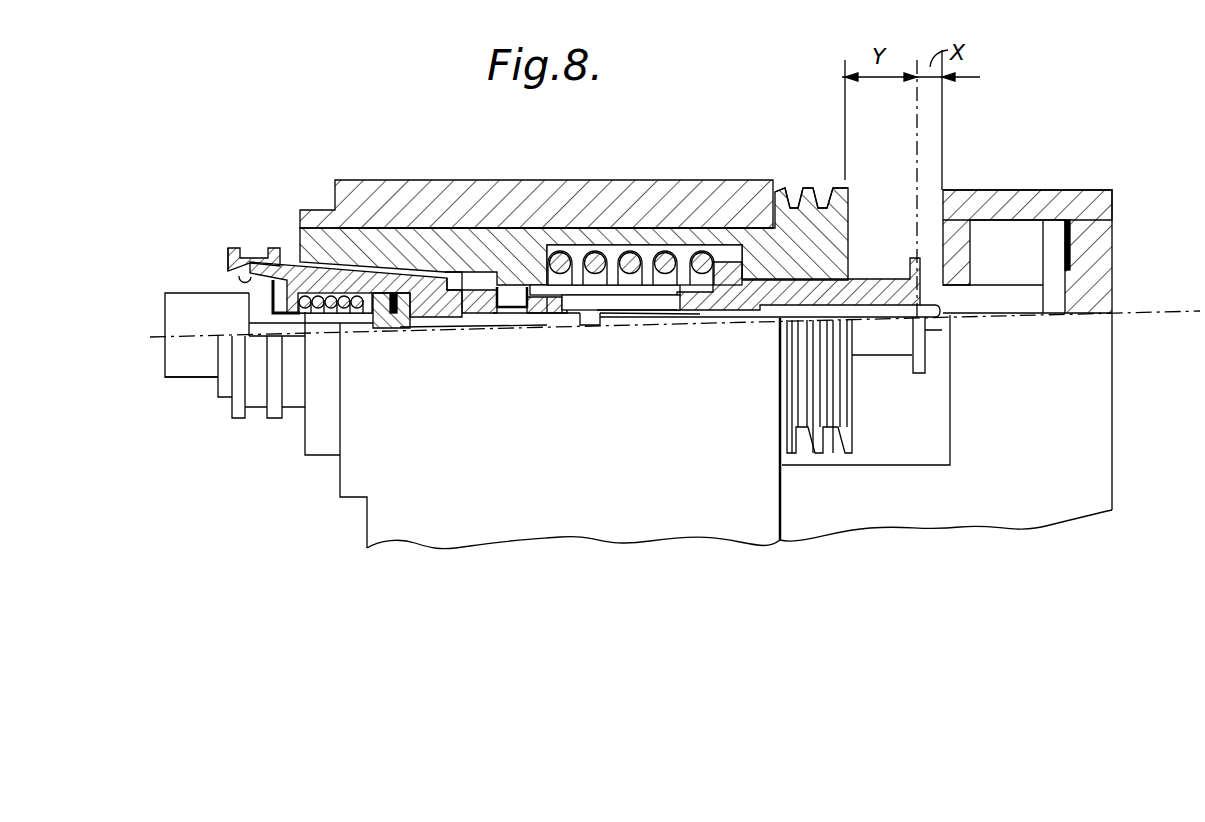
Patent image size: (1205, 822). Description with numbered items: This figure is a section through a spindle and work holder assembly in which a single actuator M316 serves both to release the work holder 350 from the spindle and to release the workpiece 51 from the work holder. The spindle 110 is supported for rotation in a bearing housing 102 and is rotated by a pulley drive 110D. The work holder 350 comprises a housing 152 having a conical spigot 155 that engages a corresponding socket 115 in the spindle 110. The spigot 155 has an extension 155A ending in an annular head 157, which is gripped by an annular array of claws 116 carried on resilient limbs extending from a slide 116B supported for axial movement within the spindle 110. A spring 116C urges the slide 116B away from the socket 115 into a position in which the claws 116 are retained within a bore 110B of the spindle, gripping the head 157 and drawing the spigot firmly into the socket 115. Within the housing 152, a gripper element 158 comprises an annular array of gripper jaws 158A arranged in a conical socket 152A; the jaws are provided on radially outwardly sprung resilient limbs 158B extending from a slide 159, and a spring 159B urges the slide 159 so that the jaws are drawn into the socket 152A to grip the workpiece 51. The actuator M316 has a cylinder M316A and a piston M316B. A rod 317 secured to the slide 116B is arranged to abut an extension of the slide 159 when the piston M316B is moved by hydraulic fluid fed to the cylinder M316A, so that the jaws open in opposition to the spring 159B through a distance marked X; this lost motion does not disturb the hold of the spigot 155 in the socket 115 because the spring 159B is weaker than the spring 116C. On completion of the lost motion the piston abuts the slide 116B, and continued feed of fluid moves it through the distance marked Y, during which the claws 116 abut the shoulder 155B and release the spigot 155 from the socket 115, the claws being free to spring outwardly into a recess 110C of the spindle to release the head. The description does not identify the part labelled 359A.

The workpiece 51 is at (175, 376).
The bearing housing 102 is at (710, 182).
The spindle 110 is at (433, 242).
The bore of the spindle 110B is at (507, 287).
The recess of the spindle 110C is at (450, 320).
The pulley drive 110D is at (806, 190).
The socket 115 is at (437, 232).
The claws 116 is at (505, 320).
The slide 116B is at (762, 302).
The spring 116C is at (623, 252).
The housing 152 is at (239, 249).
The conical socket 152A is at (257, 270).
The conical spigot 155 is at (345, 265).
The extension 155A is at (500, 317).
The shoulder 155B is at (492, 290).
The annular head 157 is at (553, 317).
The gripper element 158 is at (205, 292).
The gripper jaws 158A is at (222, 296).
The resilient limbs 158B is at (302, 318).
The slide 159 is at (386, 330).
The spring 159B is at (337, 310).
The rod 317 is at (645, 320).
The work holder 350 is at (220, 252).
The snap ring 359A is at (580, 320).
The actuator M316 is at (1118, 225).
The cylinder M316A is at (1040, 205).
The piston M316B is at (1058, 258).